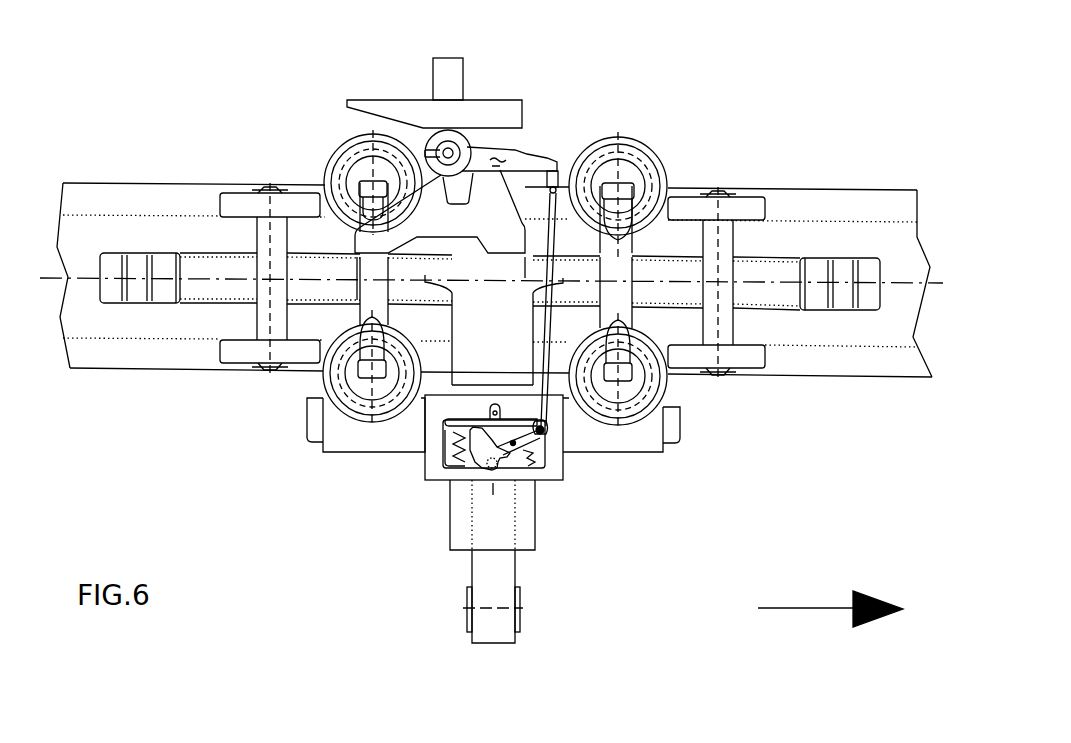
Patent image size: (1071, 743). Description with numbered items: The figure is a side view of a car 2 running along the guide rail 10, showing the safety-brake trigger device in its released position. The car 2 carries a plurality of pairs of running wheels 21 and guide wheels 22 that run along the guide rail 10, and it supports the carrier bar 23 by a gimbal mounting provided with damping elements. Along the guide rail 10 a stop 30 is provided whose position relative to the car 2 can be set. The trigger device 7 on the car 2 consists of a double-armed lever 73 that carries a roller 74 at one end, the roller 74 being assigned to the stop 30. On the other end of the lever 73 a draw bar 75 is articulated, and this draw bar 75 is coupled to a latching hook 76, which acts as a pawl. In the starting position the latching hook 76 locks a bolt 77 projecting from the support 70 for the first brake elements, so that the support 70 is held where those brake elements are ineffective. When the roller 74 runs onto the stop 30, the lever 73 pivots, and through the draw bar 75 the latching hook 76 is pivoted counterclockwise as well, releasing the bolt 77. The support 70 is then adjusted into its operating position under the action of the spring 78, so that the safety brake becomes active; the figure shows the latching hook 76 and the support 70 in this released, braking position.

The guide rail 10 is at (827, 212).
The car 2 is at (383, 465).
The running wheels 21 is at (348, 167).
The guide wheels 22 is at (253, 210).
The stop 30 is at (508, 117).
The roller 74 is at (453, 145).
The trigger device 7 is at (502, 152).
The double-armed lever 73 is at (520, 167).
The draw bar 75 is at (548, 325).
The support 70 is at (453, 425).
The latching hook 76 is at (500, 427).
The bolt 77 is at (513, 443).
The spring 78 is at (453, 458).
The carrier bar 23 is at (482, 570).